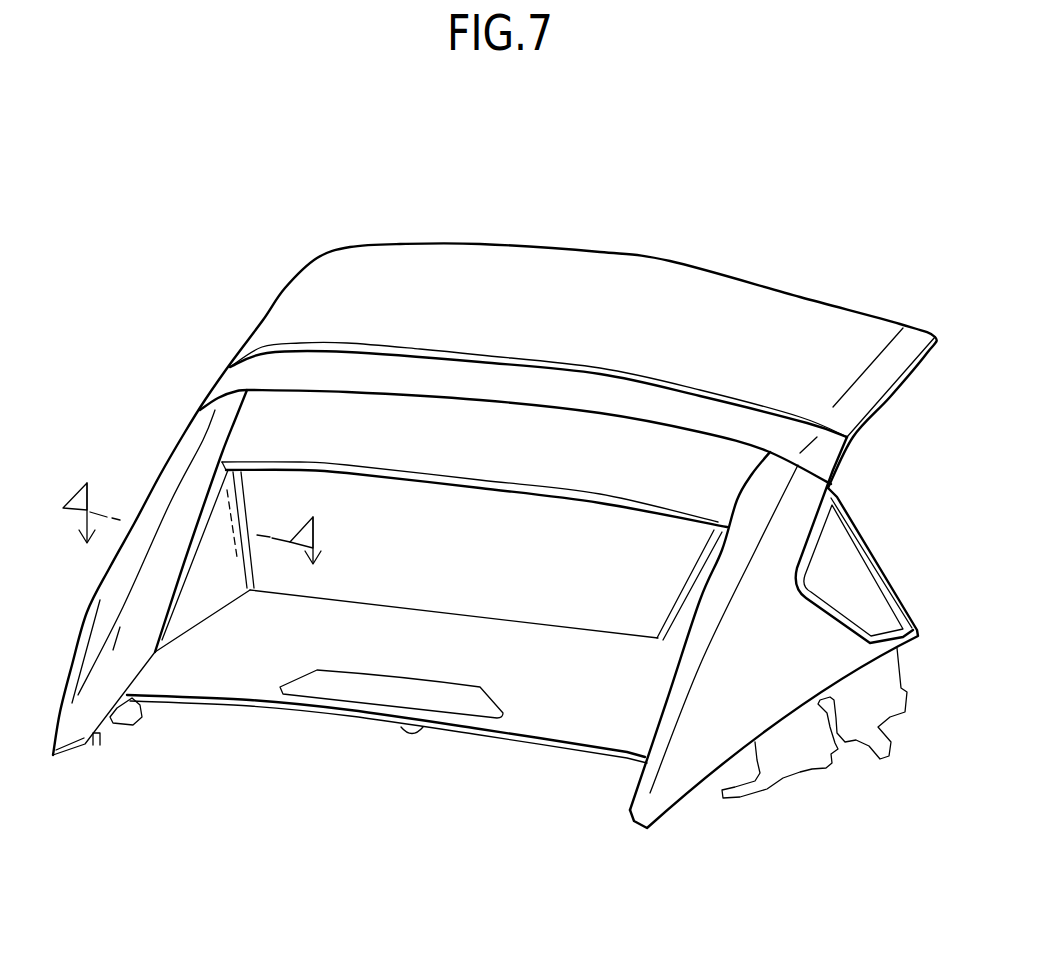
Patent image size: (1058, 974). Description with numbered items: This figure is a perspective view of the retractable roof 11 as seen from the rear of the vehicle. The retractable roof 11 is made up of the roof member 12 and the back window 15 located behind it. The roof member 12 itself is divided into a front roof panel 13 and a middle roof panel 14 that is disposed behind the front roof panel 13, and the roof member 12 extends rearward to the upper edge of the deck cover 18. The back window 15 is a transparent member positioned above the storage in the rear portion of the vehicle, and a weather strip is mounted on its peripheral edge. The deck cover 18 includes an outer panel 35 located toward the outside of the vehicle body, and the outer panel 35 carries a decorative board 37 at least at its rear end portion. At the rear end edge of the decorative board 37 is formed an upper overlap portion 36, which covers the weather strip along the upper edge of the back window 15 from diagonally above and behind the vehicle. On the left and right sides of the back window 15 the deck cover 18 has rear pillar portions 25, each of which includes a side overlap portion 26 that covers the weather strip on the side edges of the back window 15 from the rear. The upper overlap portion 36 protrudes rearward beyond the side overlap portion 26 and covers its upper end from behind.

The retractable roof 11 is at (510, 186).
The roof member 12 is at (278, 293).
The front roof panel 13 is at (870, 388).
The middle roof panel 14 is at (830, 457).
The back window 15 is at (450, 522).
The deck cover 18 is at (172, 454).
The rear pillar portion 25 is at (197, 600).
The side overlap portion 26 is at (233, 560).
The outer panel 35 is at (782, 532).
The upper overlap portion 36 is at (262, 463).
The decorative board 37 is at (290, 418).